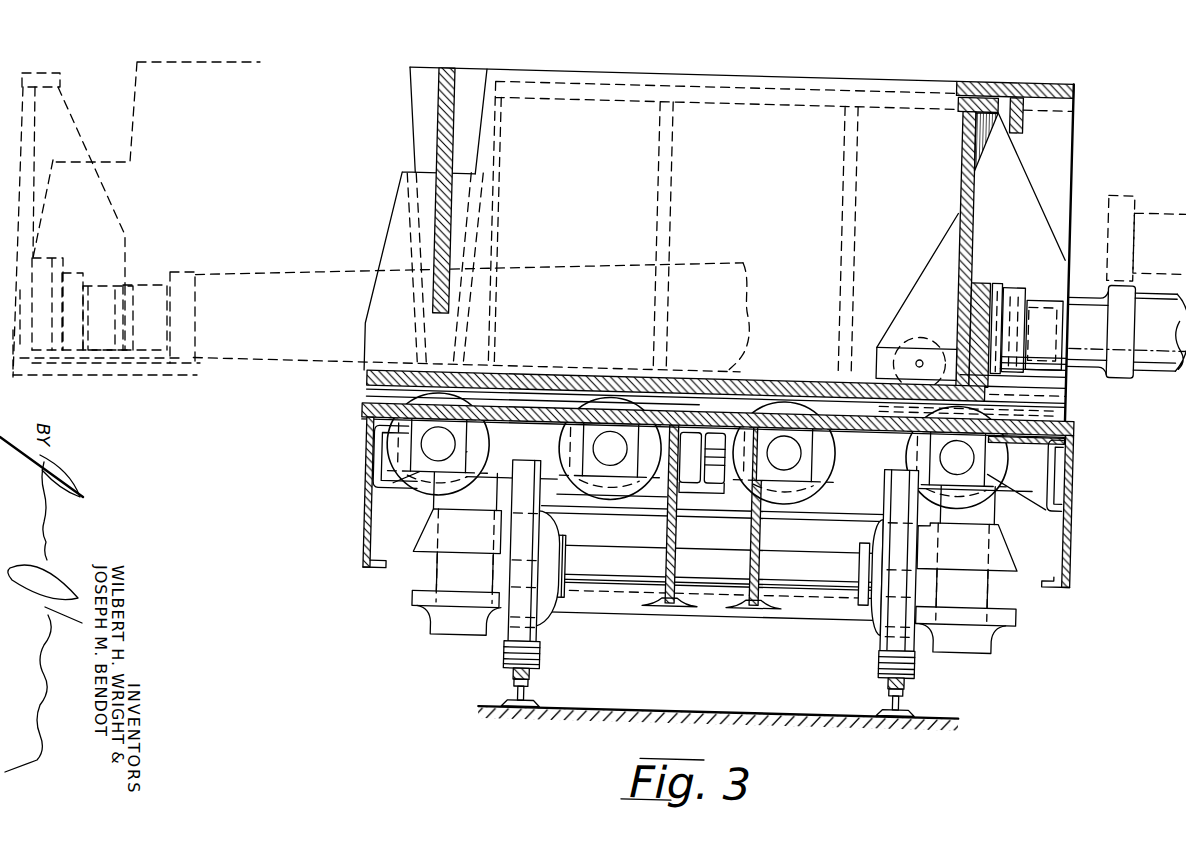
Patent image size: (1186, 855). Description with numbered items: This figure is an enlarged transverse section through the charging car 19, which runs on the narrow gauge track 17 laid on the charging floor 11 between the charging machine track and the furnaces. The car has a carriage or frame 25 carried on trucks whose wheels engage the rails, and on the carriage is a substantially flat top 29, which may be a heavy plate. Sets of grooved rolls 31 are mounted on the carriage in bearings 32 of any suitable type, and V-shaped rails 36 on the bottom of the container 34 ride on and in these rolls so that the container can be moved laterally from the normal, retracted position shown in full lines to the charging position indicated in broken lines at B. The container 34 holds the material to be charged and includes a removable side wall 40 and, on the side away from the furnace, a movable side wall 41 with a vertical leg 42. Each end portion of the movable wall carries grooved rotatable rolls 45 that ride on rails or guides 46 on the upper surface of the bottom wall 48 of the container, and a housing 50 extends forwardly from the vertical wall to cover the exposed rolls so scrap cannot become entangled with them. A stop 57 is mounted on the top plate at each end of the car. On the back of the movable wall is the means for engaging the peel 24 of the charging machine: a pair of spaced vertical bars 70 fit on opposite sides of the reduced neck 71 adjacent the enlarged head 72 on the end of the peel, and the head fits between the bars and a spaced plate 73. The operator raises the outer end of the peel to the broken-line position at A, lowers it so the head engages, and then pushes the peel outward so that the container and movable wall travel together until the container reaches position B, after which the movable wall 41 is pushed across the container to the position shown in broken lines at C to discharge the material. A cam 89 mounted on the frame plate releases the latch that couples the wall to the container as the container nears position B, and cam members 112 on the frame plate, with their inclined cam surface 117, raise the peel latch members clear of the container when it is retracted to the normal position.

The charging floor 11 is at (778, 702).
The narrow gauge track 17 is at (920, 698).
The charging car 19 is at (1072, 97).
The peel 24 is at (1120, 358).
The carriage or frame 25 is at (368, 517).
The flat top 29 is at (1075, 413).
The rolls 31 is at (592, 497).
The bearings 32 is at (472, 453).
The container 34 is at (975, 66).
The V-shaped rails 36 is at (364, 393).
The removable side wall 40 is at (426, 66).
The movable side wall 41 is at (956, 154).
The vertical leg 42 is at (956, 200).
The rotatable rolls 45 is at (912, 326).
The rails or guides 46 is at (784, 368).
The bottom wall 48 is at (804, 386).
The housing 50 is at (903, 287).
The stop 57 is at (853, 428).
The vertical bars 70 is at (1043, 283).
The reduced neck 71 is at (1012, 270).
The head 72 is at (995, 266).
The plate 73 is at (978, 266).
The cam 89 is at (752, 356).
The cam members 112 is at (1066, 393).
The inclined cam surface 117 is at (1066, 378).
The raised peel position A is at (1122, 176).
The container charging position B is at (133, 97).
The movable wall charging position C is at (50, 67).